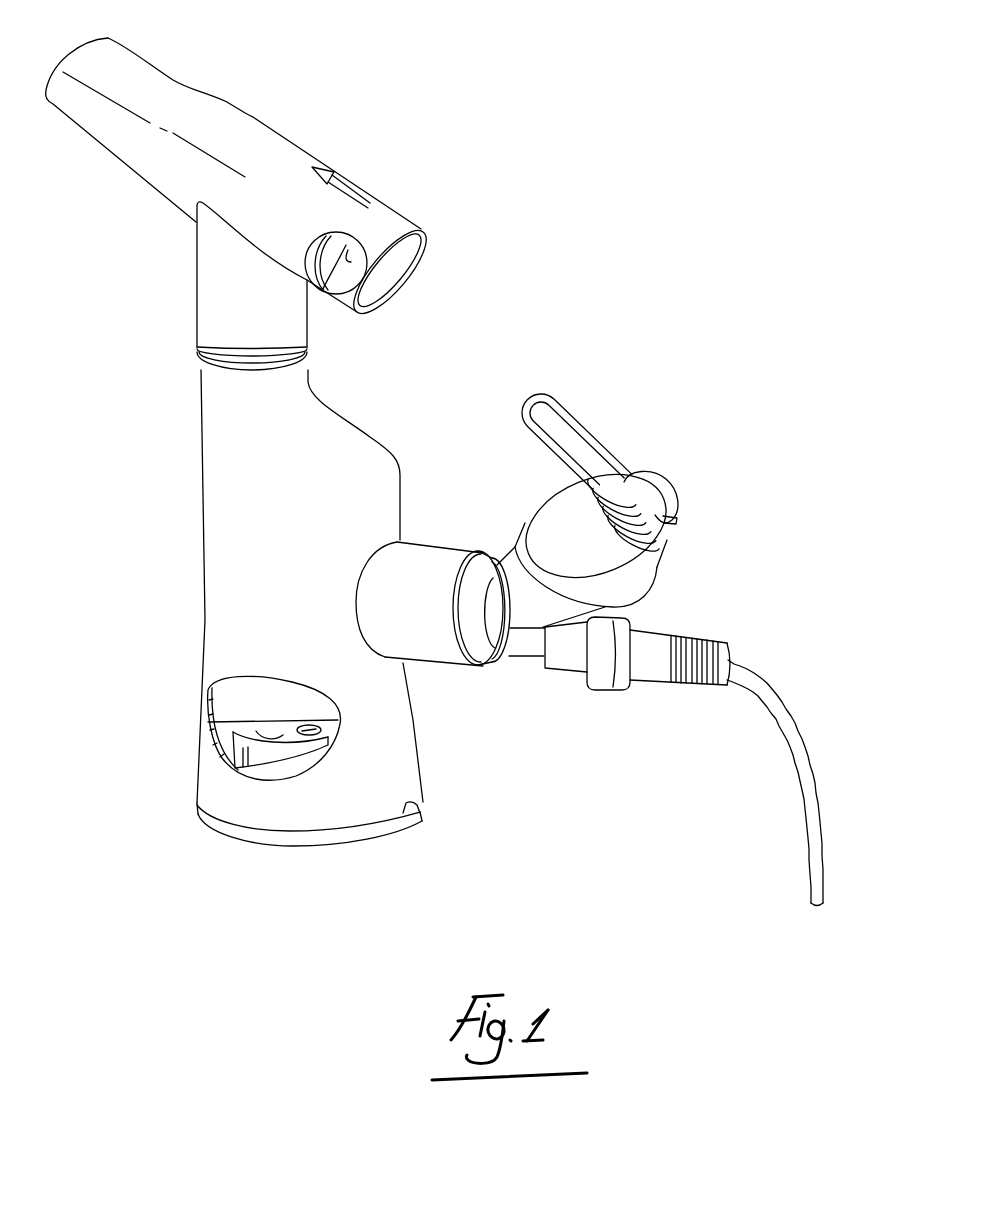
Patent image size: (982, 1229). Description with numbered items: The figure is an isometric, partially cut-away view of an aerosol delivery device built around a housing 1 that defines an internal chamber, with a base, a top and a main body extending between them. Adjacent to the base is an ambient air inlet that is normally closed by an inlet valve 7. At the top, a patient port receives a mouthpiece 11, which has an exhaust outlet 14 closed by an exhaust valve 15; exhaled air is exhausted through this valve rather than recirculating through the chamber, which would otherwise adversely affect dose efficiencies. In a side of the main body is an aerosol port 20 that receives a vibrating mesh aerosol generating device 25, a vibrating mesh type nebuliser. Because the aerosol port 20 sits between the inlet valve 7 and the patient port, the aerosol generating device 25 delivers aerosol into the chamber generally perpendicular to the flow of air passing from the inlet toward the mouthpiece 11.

The housing 1 is at (133, 598).
The inlet valve 7 is at (215, 722).
The mouthpiece 11 is at (278, 143).
The exhaust outlet 14 is at (401, 268).
The exhaust valve 15 is at (340, 262).
The aerosol port 20 is at (441, 636).
The vibrating mesh aerosol generating device 25 is at (683, 487).